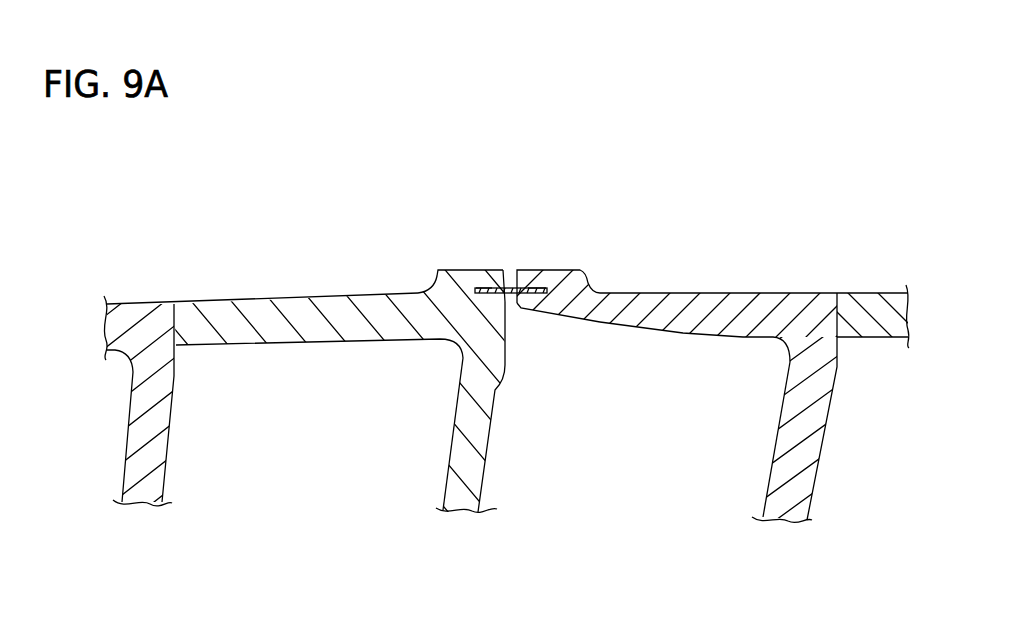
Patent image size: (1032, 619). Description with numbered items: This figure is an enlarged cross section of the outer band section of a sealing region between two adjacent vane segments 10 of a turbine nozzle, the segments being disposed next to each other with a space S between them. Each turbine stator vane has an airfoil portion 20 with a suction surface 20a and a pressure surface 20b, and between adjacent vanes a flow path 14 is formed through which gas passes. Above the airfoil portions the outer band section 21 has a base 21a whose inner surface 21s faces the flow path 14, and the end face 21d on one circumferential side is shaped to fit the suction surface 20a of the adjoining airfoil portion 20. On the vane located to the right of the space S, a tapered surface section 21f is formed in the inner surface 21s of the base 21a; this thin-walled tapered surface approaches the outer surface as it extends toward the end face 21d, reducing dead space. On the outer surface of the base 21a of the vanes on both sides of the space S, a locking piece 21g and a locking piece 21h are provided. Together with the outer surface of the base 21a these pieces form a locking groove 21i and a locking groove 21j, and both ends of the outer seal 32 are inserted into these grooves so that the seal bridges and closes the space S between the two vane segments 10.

The vane segment 10 is at (235, 254).
The flow path 14 is at (281, 430).
The airfoil portion 20 is at (516, 408).
The suction surface 20a is at (130, 412).
The pressure surface 20b is at (163, 468).
The outer band section 21 is at (479, 345).
The base 21a is at (148, 303).
The end face 21d is at (507, 268).
The tapered surface section 21f is at (572, 322).
The locking piece 21g is at (455, 269).
The locking piece 21h is at (571, 269).
The locking groove 21i is at (483, 287).
The locking groove 21j is at (536, 287).
The inner surface 21s is at (228, 346).
The outer seal 32 is at (521, 305).
The space S is at (513, 321).